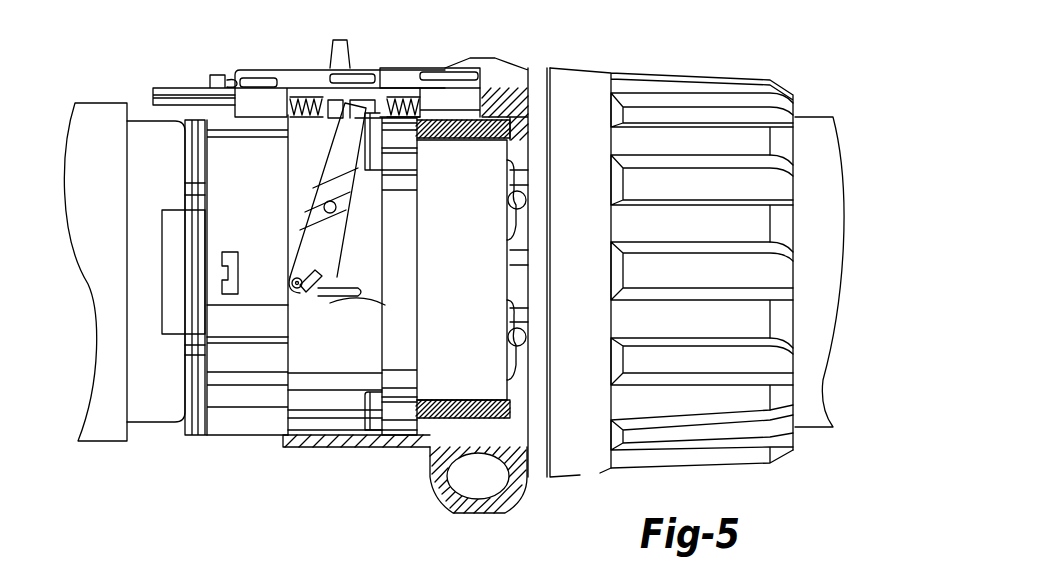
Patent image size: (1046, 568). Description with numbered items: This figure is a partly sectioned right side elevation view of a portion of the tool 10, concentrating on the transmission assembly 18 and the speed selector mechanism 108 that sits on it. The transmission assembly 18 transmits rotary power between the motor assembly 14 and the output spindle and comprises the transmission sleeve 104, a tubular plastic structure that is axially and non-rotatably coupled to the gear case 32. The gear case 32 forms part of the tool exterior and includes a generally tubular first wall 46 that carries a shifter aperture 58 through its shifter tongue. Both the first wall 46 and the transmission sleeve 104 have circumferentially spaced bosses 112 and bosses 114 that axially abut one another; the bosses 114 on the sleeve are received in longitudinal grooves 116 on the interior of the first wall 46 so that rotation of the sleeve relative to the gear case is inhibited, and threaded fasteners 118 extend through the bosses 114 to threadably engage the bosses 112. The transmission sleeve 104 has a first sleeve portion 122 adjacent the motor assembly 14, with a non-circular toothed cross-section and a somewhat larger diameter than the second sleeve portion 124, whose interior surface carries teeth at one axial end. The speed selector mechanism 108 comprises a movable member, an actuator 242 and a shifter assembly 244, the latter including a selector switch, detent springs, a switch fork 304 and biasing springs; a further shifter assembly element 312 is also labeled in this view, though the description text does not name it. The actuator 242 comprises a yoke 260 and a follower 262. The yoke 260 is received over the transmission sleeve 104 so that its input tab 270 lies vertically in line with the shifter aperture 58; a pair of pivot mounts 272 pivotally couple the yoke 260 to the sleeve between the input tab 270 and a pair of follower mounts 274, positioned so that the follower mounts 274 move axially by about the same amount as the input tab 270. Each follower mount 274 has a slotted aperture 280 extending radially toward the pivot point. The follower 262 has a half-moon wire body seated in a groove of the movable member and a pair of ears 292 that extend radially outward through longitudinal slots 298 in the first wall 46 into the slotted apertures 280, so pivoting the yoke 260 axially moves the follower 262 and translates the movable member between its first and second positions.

The tool 10 is at (796, 52).
The motor assembly 14 is at (105, 342).
The transmission assembly 18 is at (388, 219).
The gear case 32 is at (508, 496).
The first wall 46 is at (340, 436).
The shifter aperture 58 is at (183, 88).
The transmission sleeve 104 is at (268, 405).
The speed selector mechanism 108 is at (355, 66).
The bosses 112 is at (462, 430).
The bosses 114 is at (398, 425).
The grooves 116 is at (302, 428).
The threaded fasteners 118 is at (370, 410).
The first sleeve portion 122 is at (228, 368).
The second sleeve portion 124 is at (320, 326).
The actuator 242 is at (308, 184).
The shifter assembly 244 is at (263, 68).
The yoke 260 is at (303, 236).
The follower 262 is at (297, 284).
The input tab 270 is at (360, 112).
The pivot mounts 272 is at (385, 201).
The follower mounts 274 is at (318, 278).
The slotted aperture 280 is at (332, 287).
The ears 292 is at (292, 304).
The longitudinal slots 298 is at (355, 293).
The switch fork 304 is at (328, 108).
The cover 312 is at (444, 82).